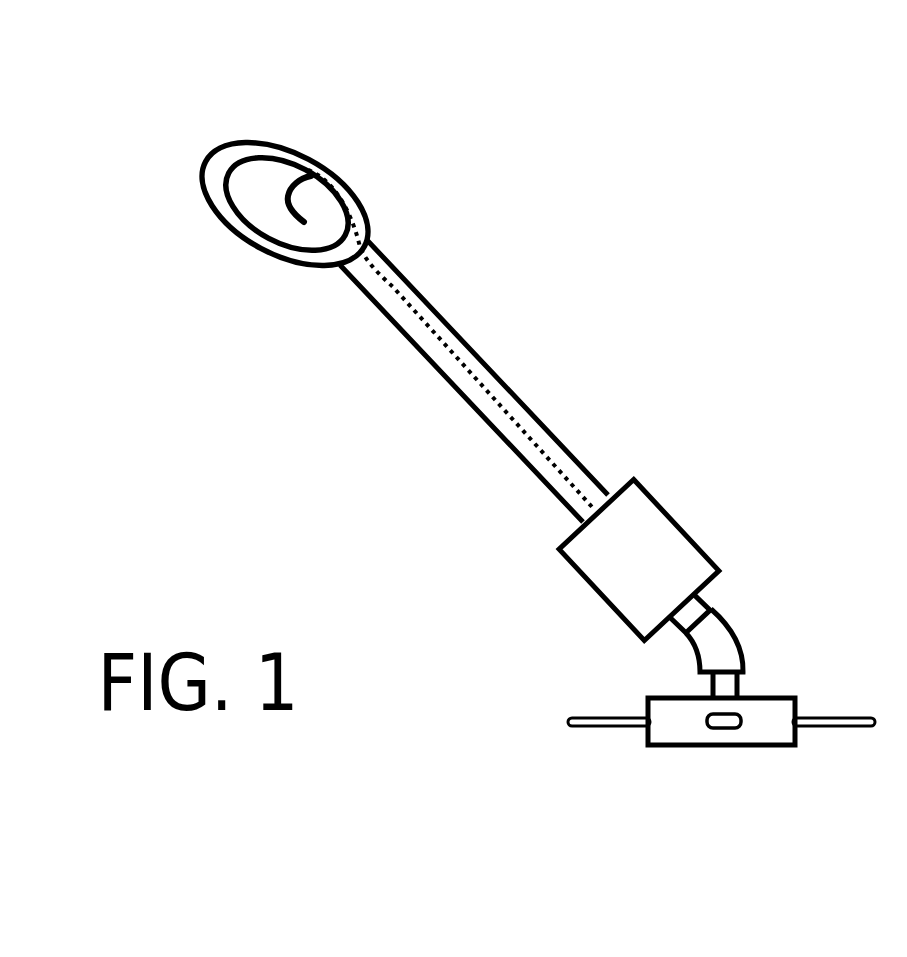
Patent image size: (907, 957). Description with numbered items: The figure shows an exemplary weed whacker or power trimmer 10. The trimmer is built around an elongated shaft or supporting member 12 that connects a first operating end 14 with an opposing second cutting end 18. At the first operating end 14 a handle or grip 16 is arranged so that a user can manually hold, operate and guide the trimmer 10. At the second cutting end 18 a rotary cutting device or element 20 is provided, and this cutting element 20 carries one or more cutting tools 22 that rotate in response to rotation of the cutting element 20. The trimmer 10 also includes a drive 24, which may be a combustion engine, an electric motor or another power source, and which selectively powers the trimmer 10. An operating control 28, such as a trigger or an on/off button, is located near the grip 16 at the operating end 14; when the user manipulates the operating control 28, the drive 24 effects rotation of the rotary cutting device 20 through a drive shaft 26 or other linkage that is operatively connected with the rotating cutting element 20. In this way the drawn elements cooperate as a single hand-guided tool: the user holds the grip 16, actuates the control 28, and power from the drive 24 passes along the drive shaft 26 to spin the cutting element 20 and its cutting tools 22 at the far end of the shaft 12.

The power trimmer 10 is at (760, 255).
The elongated shaft 12 is at (473, 353).
The first operating end 14 is at (393, 178).
The handle or grip 16 is at (201, 183).
The second cutting end 18 is at (812, 590).
The rotary cutting device 20 is at (767, 697).
The cutting tools 22 is at (603, 730).
The drive 24 is at (667, 510).
The drive shaft 26 is at (708, 688).
The operating control 28 is at (292, 204).